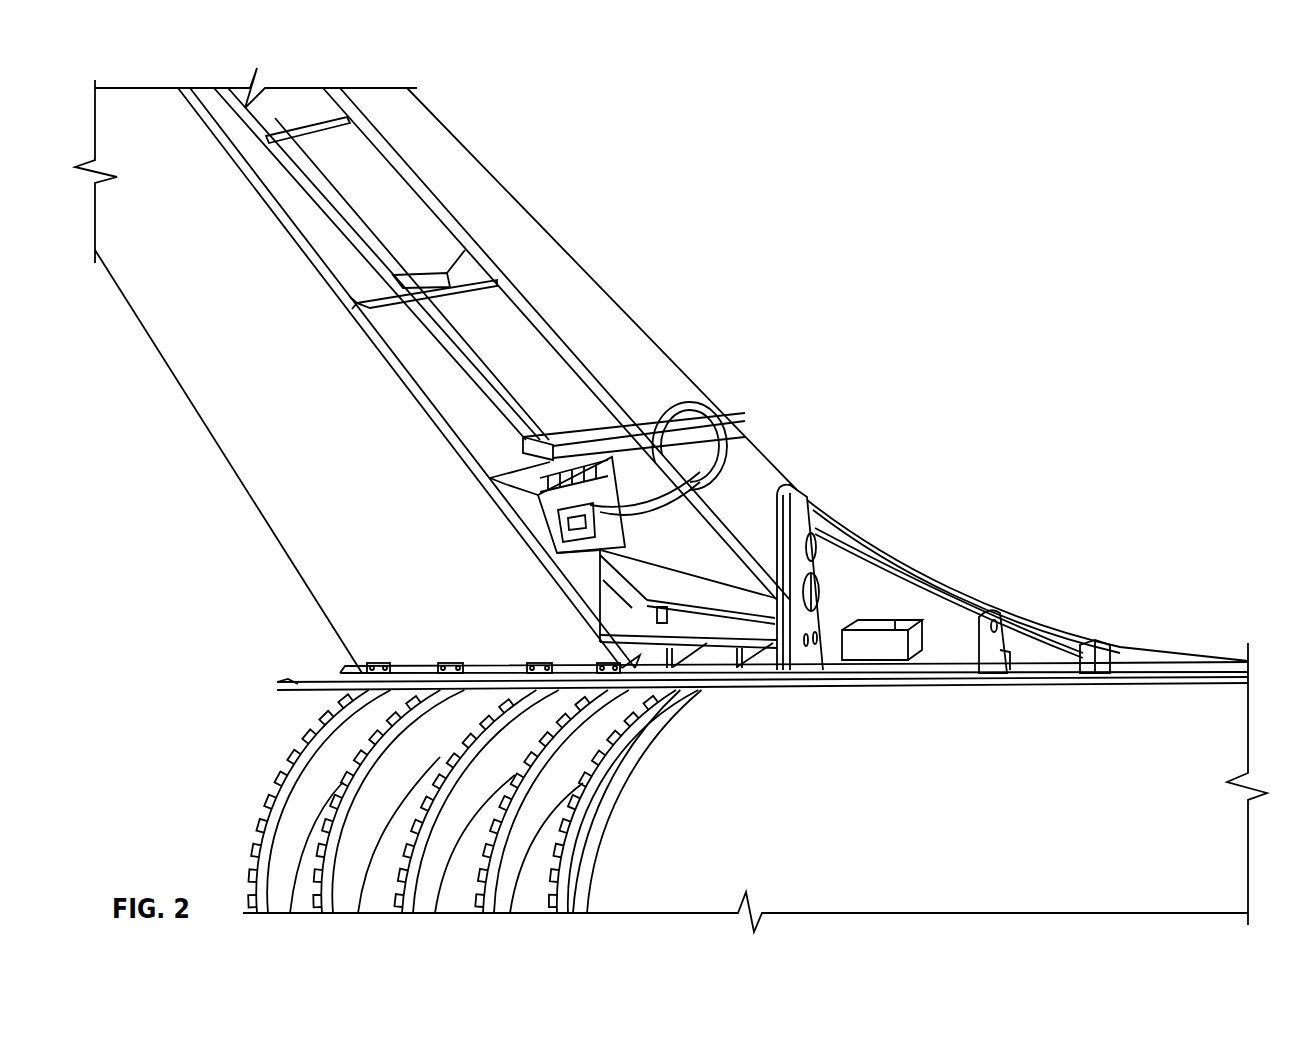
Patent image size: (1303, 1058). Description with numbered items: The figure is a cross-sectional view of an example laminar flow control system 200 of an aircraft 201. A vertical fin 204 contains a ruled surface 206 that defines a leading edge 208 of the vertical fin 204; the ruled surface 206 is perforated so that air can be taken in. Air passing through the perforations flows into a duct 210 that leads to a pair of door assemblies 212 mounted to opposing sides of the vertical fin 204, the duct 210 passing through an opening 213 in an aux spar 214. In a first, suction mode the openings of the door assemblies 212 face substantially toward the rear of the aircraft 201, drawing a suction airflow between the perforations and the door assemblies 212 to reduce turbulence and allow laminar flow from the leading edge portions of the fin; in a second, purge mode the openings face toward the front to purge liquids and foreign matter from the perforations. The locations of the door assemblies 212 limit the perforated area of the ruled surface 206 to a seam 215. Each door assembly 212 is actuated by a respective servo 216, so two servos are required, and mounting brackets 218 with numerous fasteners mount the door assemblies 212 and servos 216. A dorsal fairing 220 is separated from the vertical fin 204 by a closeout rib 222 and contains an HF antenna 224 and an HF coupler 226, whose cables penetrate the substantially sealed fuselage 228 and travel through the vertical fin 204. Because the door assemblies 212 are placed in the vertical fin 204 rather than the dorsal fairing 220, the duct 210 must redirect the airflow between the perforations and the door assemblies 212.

The laminar flow control system 200 is at (911, 197).
The aircraft 201 is at (1103, 447).
The vertical fin 204 is at (279, 538).
The ruled surface 206 is at (475, 176).
The leading edge 208 is at (608, 292).
The duct 210 is at (732, 452).
The door assemblies 212 is at (655, 470).
The opening 213 is at (720, 468).
The aux spar 214 is at (752, 527).
The seam 215 is at (717, 413).
The servos 216 is at (576, 522).
The mounting brackets 218 is at (612, 553).
The dorsal fairing 220 is at (1052, 588).
The closeout rib 222 is at (850, 533).
The HF antenna 224 is at (905, 560).
The HF coupler 226 is at (890, 622).
The fuselage 228 is at (1127, 705).